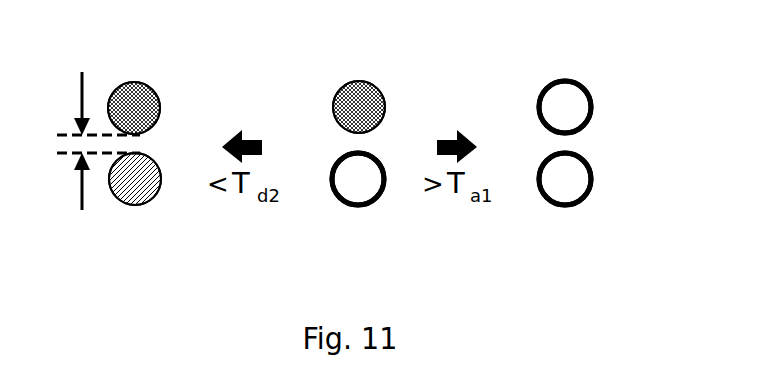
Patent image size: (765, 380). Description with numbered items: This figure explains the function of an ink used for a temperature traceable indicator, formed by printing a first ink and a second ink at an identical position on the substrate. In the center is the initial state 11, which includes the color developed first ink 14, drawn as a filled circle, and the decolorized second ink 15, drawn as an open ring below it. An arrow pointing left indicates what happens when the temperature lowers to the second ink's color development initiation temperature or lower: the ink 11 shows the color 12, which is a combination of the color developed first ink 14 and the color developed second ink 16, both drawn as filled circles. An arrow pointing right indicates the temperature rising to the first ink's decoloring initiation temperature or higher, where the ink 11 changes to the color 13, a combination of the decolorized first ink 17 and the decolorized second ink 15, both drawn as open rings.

The initial state 11 is at (367, 173).
The color derived from developed first and second inks 12 is at (137, 173).
The color derived from decolorized first and second inks 13 is at (577, 173).
The color developed first ink 14 is at (132, 93).
The decolorized second ink 15 is at (357, 197).
The color developed second ink 16 is at (133, 202).
The decolorized first ink 17 is at (555, 93).